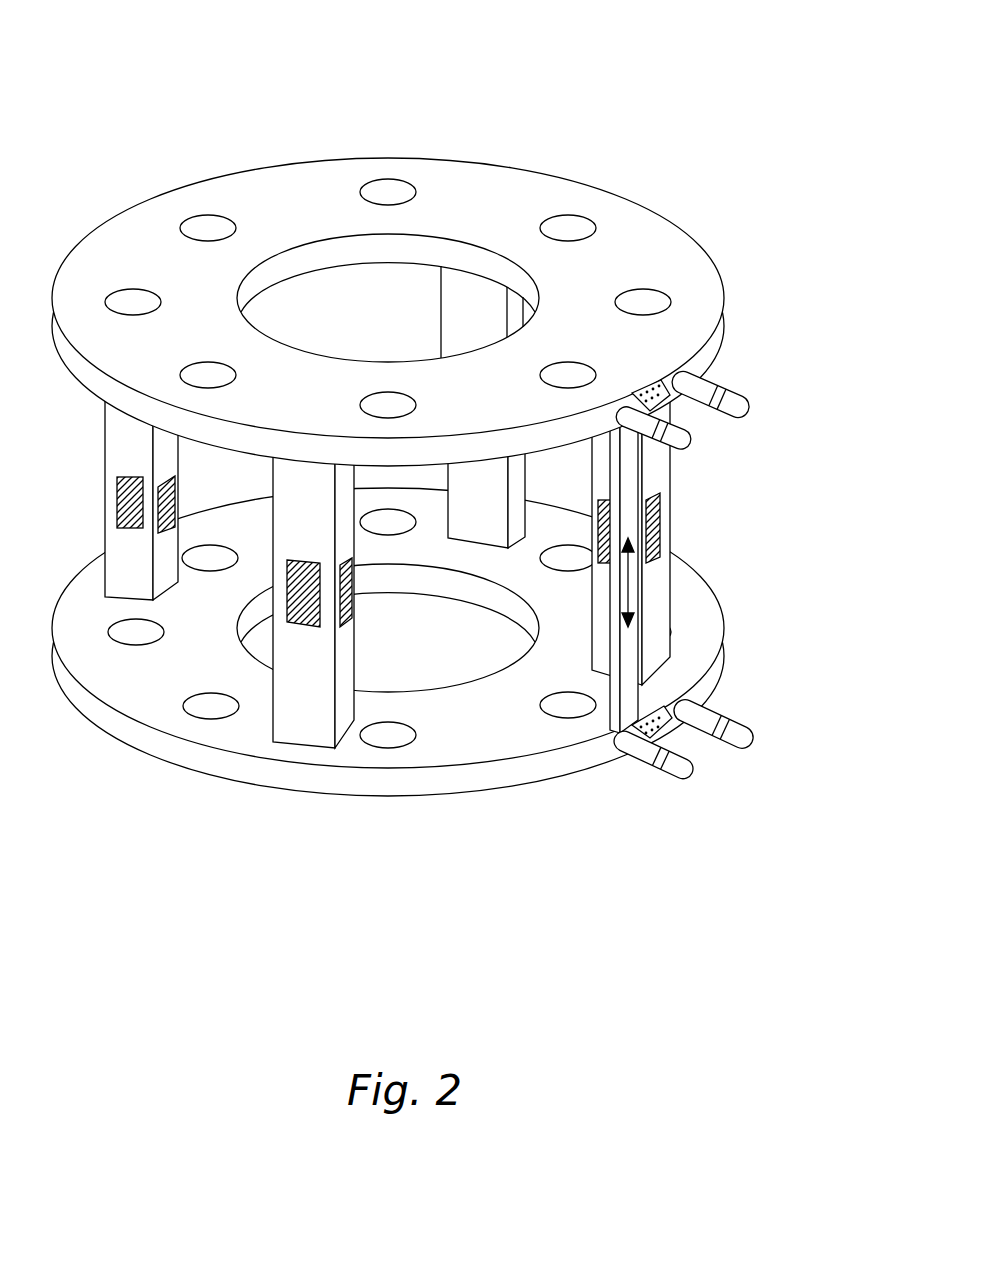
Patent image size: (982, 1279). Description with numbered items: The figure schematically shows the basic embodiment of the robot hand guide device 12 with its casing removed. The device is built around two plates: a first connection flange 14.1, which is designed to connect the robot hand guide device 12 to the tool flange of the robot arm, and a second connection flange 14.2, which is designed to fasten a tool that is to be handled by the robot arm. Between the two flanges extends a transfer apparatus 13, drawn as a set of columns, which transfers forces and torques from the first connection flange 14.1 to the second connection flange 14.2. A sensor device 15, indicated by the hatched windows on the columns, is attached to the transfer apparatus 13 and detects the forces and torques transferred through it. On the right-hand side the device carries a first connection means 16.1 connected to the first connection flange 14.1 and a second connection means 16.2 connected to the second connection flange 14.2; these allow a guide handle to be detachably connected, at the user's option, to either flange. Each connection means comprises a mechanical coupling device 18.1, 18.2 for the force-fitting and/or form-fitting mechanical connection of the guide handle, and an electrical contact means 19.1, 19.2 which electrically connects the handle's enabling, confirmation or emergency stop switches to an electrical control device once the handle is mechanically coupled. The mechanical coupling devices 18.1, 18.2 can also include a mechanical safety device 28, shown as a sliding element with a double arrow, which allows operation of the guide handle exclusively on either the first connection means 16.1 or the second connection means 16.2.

The robot hand guide device 12 is at (438, 438).
The transfer apparatus 13 is at (120, 577).
The first connection flange 14.1 is at (641, 243).
The second connection flange 14.2 is at (135, 737).
The sensor device 15 is at (160, 498).
The first connection means 16.1 is at (727, 378).
The second connection means 16.2 is at (723, 763).
The mechanical coupling device 18.1 is at (690, 443).
The mechanical coupling device 18.2 is at (692, 773).
The electrical contact means 19.1 is at (646, 388).
The electrical contact means 19.2 is at (677, 697).
The mechanical safety device 28 is at (620, 688).